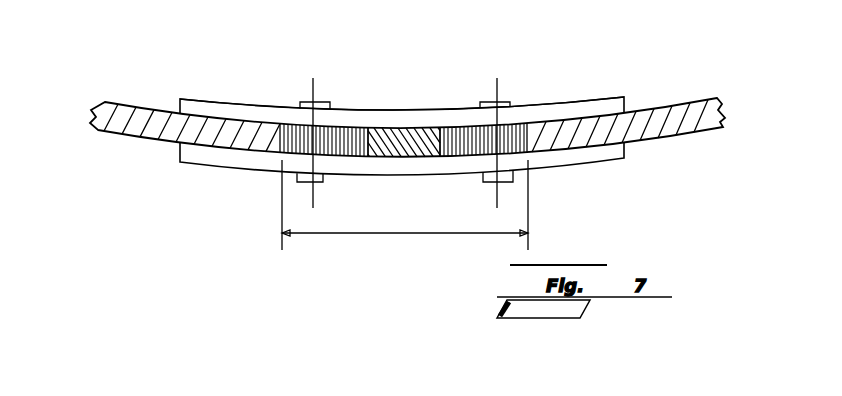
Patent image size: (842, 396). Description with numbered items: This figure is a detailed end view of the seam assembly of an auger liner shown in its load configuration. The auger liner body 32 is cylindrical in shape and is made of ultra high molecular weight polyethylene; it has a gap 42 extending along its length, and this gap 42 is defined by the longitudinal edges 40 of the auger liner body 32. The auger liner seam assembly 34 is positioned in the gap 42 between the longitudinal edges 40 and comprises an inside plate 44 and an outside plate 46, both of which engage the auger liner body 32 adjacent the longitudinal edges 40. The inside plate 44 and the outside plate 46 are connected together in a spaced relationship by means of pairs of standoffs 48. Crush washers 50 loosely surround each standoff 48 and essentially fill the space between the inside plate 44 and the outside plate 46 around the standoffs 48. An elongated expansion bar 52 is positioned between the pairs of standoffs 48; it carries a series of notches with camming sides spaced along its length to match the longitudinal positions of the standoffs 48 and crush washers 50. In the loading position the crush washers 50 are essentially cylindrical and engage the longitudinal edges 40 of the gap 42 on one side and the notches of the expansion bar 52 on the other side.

The auger liner body 32 is at (133, 137).
The auger liner seam assembly 34 is at (555, 100).
The longitudinal edges 40 is at (280, 141).
The gap 42 is at (392, 235).
The inside plate 44 is at (612, 97).
The outside plate 46 is at (618, 158).
The standoffs 48 is at (310, 101).
The crush washers 50 is at (343, 138).
The expansion bar 52 is at (405, 132).